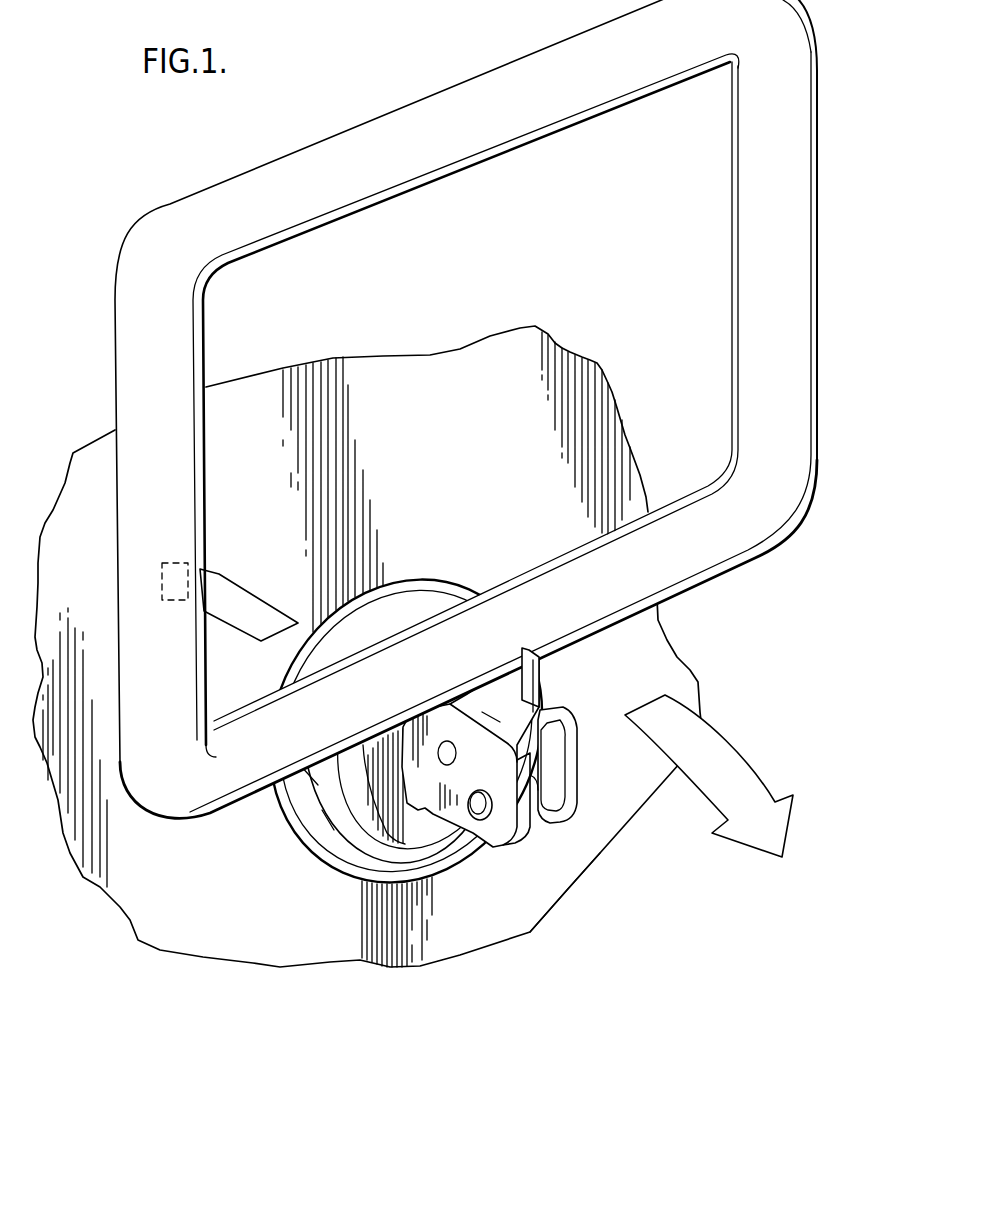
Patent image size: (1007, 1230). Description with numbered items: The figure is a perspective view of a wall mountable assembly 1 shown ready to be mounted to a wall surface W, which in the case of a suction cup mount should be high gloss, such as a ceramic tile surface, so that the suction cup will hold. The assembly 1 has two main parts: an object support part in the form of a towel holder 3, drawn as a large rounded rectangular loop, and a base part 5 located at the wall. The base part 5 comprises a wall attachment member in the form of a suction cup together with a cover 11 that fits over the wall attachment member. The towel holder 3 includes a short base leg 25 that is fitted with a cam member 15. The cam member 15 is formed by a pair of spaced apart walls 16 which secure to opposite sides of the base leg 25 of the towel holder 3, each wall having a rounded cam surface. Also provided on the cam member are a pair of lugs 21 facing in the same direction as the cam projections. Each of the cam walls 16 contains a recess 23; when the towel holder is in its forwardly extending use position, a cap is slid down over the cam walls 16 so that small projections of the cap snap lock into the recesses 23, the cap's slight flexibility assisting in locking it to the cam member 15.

The wall mountable assembly 1 is at (218, 990).
The towel holder 3 is at (797, 302).
The base part 5 is at (312, 866).
The cover 11 is at (360, 857).
The cam member 15 is at (530, 956).
The walls 16 is at (572, 783).
The lugs 21 is at (483, 845).
The recesses 23 is at (491, 818).
The base leg 25 is at (541, 684).
The wall surface W is at (140, 893).